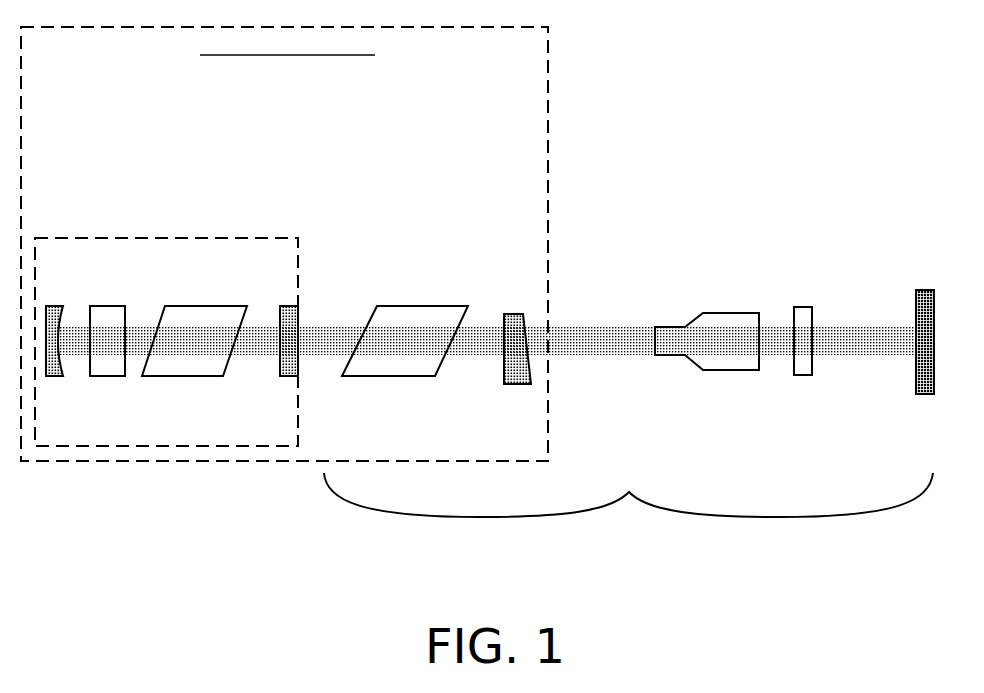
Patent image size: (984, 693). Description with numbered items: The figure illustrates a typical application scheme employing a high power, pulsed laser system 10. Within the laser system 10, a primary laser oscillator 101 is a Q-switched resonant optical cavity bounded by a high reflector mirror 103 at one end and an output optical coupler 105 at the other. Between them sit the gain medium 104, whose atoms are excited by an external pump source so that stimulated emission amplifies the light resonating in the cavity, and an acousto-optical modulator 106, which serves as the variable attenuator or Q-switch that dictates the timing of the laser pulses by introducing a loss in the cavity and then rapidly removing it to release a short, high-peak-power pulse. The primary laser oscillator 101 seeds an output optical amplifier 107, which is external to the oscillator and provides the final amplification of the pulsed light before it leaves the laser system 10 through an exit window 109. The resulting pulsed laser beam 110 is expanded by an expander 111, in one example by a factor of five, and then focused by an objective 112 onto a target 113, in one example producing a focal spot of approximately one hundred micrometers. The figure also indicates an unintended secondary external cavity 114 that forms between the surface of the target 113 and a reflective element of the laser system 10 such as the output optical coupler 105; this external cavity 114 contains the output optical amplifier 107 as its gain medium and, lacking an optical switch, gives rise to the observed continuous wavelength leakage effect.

The pulsed laser system 10 is at (284, 244).
The primary laser oscillator 101 is at (157, 238).
The high reflector mirror 103 is at (55, 377).
The gain medium 104 is at (201, 306).
The output optical coupler 105 is at (290, 377).
The acousto-optical modulator 106 is at (106, 306).
The output optical amplifier 107 is at (409, 306).
The exit window 109 is at (511, 314).
The pulsed laser beam 110 is at (600, 340).
The expander 111 is at (725, 315).
The objective 112 is at (803, 307).
The target 113 is at (920, 290).
The secondary external cavity 114 is at (629, 492).